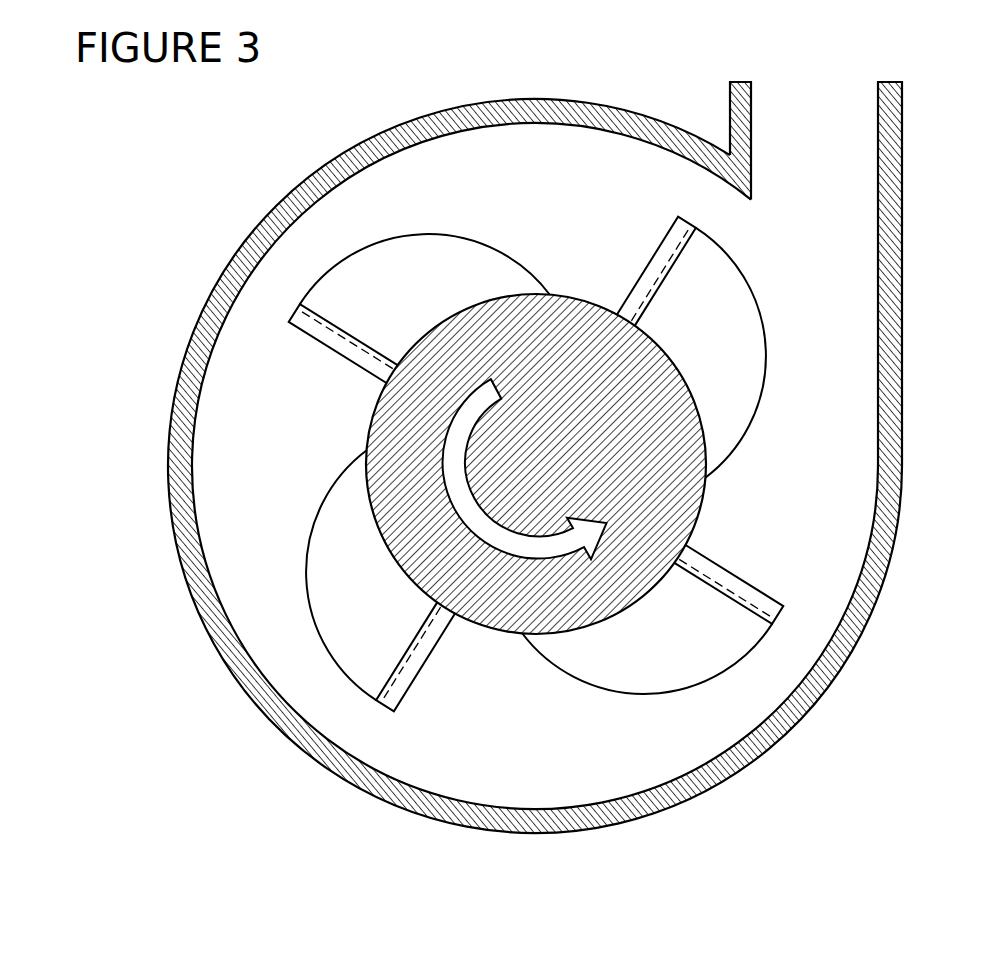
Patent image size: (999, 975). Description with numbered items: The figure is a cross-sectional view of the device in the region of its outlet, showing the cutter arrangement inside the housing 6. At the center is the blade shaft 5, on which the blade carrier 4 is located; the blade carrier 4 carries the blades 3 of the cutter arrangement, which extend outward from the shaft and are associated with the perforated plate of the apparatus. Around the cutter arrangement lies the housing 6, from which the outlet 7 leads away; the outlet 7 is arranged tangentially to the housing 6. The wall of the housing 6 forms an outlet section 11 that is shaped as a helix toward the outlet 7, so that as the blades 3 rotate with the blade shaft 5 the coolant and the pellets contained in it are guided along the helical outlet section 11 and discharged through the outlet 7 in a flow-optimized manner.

The blade 3 is at (317, 333).
The blade carrier 4 is at (432, 250).
The blade shaft 5 is at (487, 627).
The housing 6 is at (278, 720).
The outlet 7 is at (752, 103).
The outlet section 11 is at (841, 247).